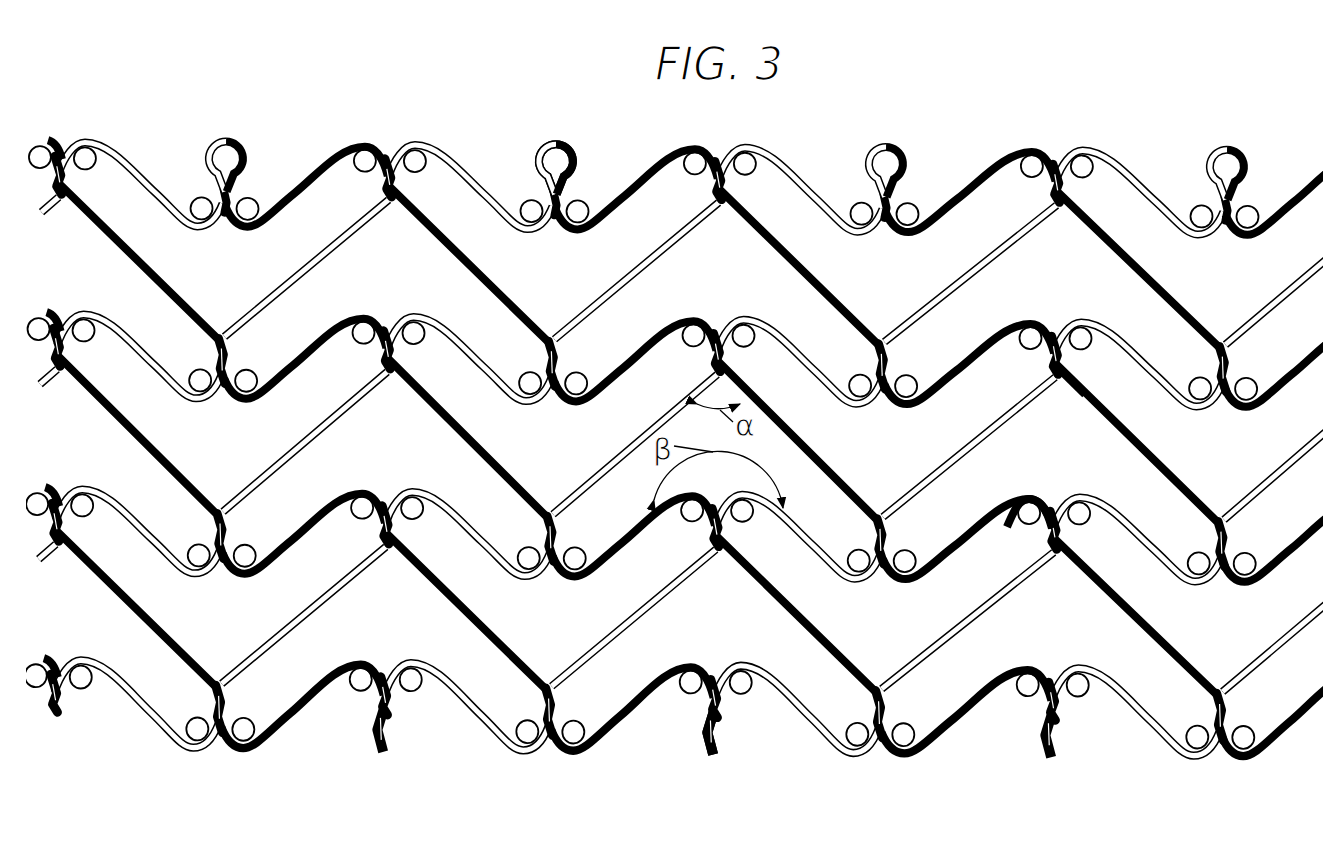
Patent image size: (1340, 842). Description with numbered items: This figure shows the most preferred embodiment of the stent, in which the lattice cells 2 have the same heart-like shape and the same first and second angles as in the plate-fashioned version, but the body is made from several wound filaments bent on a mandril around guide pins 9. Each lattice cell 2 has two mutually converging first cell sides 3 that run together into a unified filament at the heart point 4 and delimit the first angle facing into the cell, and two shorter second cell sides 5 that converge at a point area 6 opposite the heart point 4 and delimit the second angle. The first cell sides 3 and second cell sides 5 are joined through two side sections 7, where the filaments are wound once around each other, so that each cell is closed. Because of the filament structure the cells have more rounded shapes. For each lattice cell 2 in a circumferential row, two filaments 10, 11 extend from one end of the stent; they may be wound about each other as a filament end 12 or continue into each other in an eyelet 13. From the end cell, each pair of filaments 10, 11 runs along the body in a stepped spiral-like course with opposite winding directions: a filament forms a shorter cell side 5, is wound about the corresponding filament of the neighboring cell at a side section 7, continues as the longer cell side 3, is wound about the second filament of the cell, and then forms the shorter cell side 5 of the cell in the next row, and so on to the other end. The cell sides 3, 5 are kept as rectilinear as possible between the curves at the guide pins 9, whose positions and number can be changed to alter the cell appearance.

The lattice cell 2 is at (1062, 295).
The first cell side 3 is at (477, 283).
The heart point 4 is at (1053, 383).
The second cell side 5 is at (477, 202).
The point area 6 is at (1054, 492).
The side section 7 is at (726, 362).
The guide pin 9 is at (683, 333).
The filament 10 is at (580, 151).
The filament 11 is at (538, 153).
The filament end 12 is at (702, 759).
The eyelet 13 is at (551, 129).